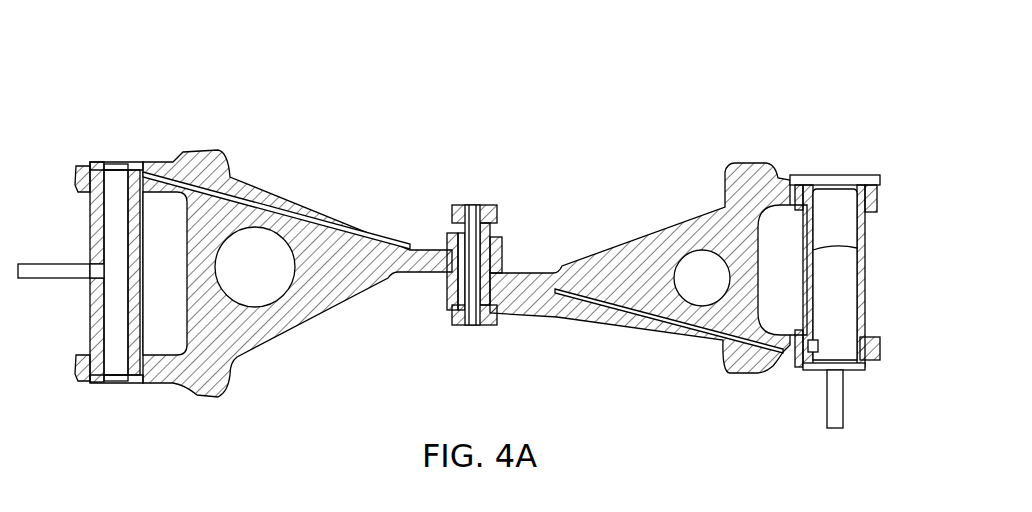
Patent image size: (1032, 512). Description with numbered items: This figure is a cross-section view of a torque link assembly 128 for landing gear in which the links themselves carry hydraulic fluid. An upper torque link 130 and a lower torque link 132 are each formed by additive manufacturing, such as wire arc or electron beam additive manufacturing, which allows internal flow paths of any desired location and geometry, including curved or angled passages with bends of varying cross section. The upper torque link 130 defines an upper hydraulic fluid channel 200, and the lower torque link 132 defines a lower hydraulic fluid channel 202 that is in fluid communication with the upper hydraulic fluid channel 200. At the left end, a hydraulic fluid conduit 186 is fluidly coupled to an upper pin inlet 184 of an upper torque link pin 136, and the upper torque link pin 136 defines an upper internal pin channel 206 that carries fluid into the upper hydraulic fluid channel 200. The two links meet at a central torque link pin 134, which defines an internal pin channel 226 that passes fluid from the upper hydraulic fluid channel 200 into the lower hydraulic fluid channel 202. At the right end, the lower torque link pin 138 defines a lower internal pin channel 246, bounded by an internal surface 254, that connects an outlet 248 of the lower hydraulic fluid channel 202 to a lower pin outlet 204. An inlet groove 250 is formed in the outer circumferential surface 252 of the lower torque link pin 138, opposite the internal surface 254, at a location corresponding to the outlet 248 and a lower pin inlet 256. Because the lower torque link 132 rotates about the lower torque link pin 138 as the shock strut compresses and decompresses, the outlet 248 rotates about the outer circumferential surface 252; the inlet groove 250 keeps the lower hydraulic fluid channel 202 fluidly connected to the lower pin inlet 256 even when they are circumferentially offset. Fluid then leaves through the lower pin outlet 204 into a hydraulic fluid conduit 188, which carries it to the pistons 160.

The torque link assembly 128 is at (266, 66).
The upper torque link 130 is at (222, 157).
The lower torque link 132 is at (640, 237).
The torque link pin 134 is at (461, 205).
The upper torque link pin 136 is at (90, 205).
The lower torque link pin 138 is at (822, 175).
The pistons 160 is at (836, 435).
The upper pin inlet 184 is at (87, 261).
The hydraulic fluid conduit 186 is at (40, 279).
The hydraulic fluid conduit 188 is at (832, 409).
The upper hydraulic fluid channel 200 is at (329, 218).
The lower hydraulic fluid channel 202 is at (588, 300).
The lower pin outlet 204 is at (849, 376).
The upper internal pin channel 206 is at (124, 299).
The internal pin channel 226 is at (476, 268).
The lower internal pin channel 246 is at (838, 268).
The outlet 248 is at (797, 358).
The inlet groove 250 is at (868, 350).
The outer circumferential surface 252 is at (866, 237).
The internal surface 254 is at (815, 249).
The lower pin inlet 256 is at (817, 343).